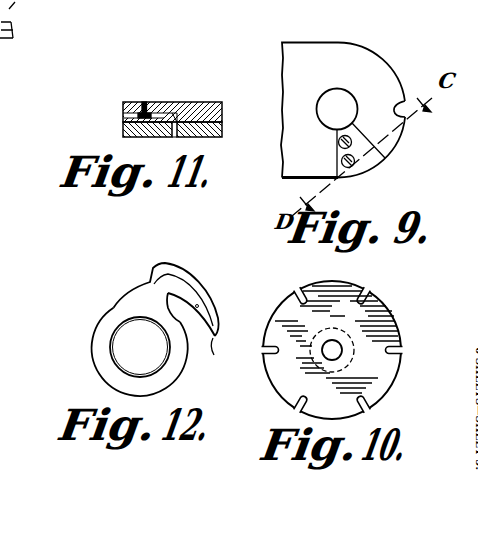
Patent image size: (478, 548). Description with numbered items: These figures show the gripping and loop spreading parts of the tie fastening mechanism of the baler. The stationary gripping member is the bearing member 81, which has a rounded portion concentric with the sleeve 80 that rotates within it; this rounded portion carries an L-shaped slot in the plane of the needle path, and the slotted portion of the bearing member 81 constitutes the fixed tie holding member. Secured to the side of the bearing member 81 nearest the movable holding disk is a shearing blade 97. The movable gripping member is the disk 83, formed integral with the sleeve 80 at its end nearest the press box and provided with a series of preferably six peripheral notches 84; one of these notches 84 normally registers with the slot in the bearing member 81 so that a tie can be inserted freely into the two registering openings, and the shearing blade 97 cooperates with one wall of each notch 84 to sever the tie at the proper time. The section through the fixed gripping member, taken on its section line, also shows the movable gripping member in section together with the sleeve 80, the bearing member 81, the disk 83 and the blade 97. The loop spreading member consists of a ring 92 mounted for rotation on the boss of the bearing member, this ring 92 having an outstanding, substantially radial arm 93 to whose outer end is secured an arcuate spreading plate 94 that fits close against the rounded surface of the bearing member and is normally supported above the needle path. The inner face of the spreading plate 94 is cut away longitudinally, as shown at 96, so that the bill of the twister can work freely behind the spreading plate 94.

In FIG. 10, the sleeve 80 is at (357, 323).
In FIG. 9, the bearing member 81 is at (353, 52).
In FIG. 11, the bearing member 81 is at (213, 105).
In FIG. 11, the disk 83 is at (222, 130).
In FIG. 10, the disk 83 is at (398, 323).
In FIG. 11, the peripheral notches 84 is at (174, 130).
In FIG. 10, the peripheral notches 84 is at (397, 355).
In FIG. 12, the ring 92 is at (103, 357).
In FIG. 12, the arm 93 is at (148, 298).
In FIG. 12, the spreading plate 94 is at (234, 360).
In FIG. 12, the cut-away portion 96 is at (198, 305).
In FIG. 9, the shearing blade 97 is at (383, 160).
In FIG. 11, the shearing blade 97 is at (165, 113).